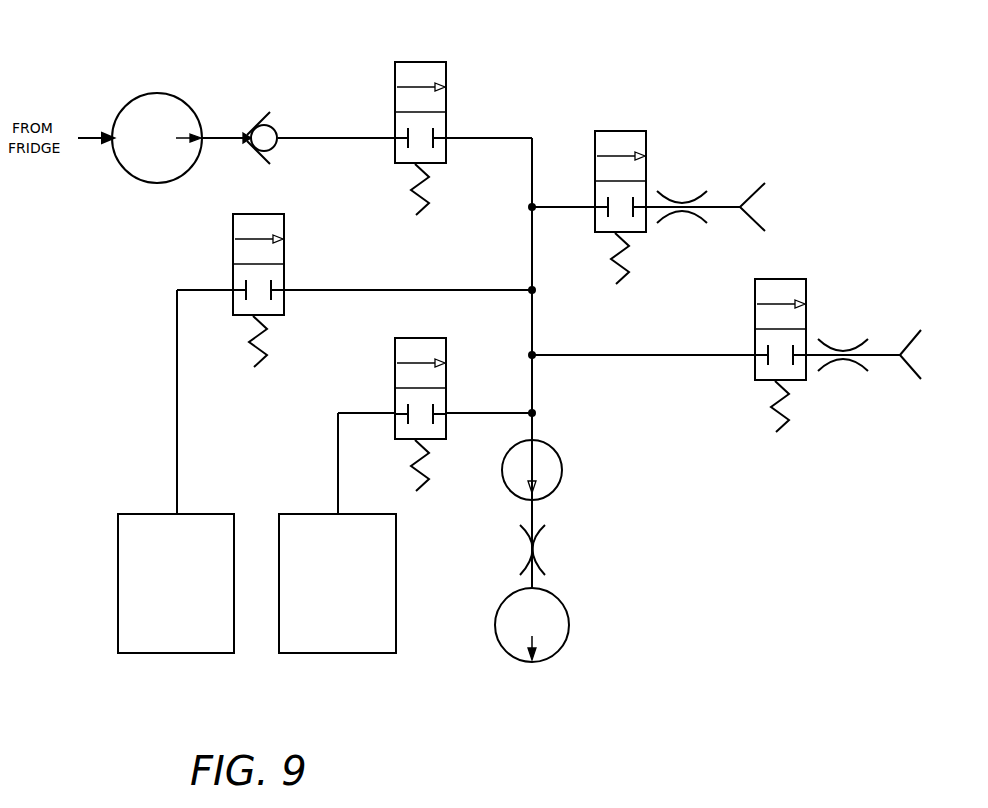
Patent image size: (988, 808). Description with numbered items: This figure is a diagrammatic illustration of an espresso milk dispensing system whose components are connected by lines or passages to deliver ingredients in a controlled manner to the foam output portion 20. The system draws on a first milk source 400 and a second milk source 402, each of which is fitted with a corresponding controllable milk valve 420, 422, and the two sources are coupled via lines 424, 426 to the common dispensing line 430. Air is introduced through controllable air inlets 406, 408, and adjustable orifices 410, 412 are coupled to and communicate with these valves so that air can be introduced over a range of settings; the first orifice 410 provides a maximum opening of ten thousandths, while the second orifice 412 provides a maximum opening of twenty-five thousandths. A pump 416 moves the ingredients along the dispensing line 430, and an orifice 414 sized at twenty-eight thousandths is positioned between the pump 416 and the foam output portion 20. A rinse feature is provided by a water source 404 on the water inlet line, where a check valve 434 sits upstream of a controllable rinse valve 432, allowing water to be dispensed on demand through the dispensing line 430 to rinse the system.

The foam output portion 20 is at (532, 662).
The first milk source 400 is at (176, 653).
The second milk source 402 is at (337, 653).
The water source 404 is at (158, 93).
The controllable air inlet 406 is at (622, 131).
The controllable air inlet 408 is at (780, 279).
The adjustable orifice 410 is at (680, 191).
The adjustable orifice 412 is at (845, 339).
The orifice 414 is at (545, 548).
The pump 416 is at (563, 470).
The controllable milk valve 420 is at (233, 250).
The controllable milk valve 422 is at (395, 378).
The line 424 is at (366, 290).
The line 426 is at (483, 413).
The dispensing line 430 is at (530, 508).
The controllable rinse valve 432 is at (421, 62).
The check valve 434 is at (270, 112).